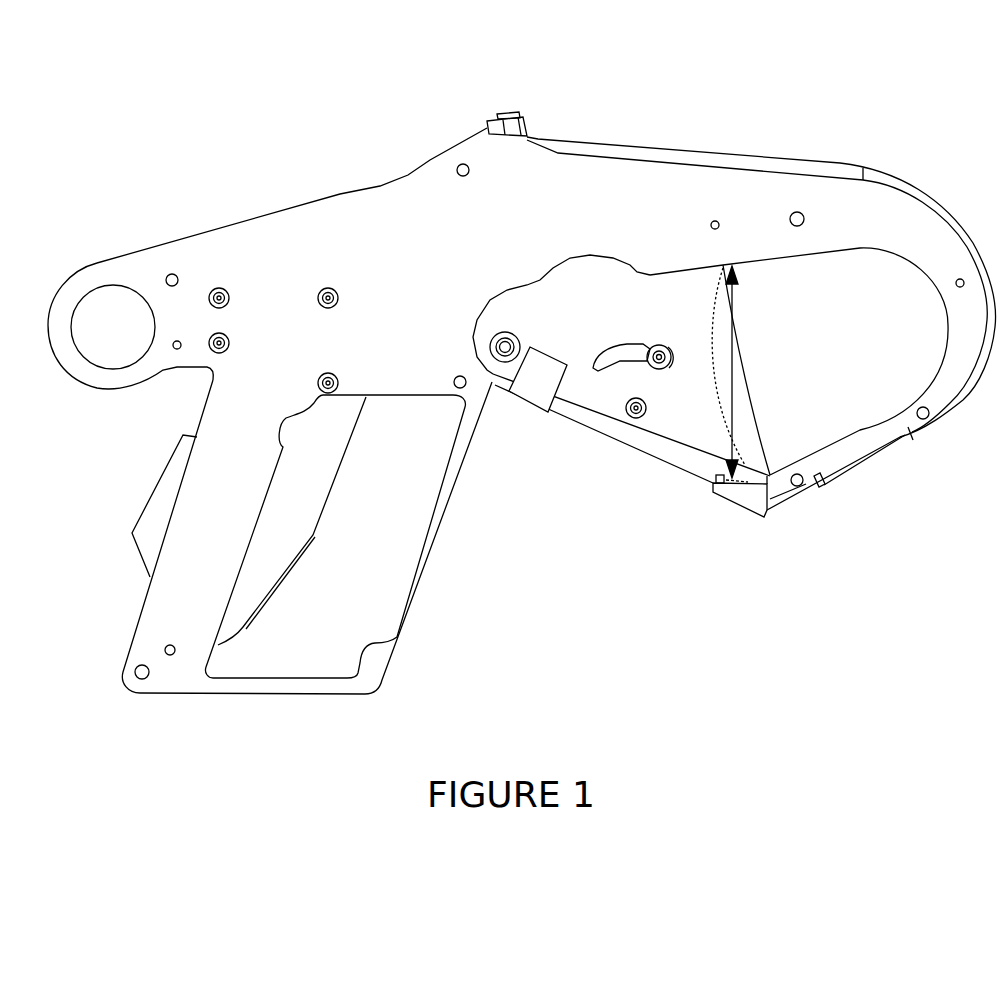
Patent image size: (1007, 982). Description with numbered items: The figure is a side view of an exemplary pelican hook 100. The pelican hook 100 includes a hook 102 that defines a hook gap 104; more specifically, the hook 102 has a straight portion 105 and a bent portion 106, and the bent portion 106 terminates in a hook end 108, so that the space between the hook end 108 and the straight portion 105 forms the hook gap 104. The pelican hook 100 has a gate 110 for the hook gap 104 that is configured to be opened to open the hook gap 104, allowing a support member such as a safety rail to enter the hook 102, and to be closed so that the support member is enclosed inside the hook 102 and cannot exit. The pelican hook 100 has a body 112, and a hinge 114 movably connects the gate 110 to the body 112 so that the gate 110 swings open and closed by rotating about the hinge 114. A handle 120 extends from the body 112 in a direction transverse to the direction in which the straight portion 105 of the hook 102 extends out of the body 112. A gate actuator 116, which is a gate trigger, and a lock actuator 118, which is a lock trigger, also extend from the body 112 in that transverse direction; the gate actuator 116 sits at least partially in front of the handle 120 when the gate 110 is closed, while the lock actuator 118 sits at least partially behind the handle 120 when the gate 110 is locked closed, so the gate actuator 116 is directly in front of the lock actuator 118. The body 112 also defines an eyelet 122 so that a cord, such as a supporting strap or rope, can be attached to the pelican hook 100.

The pelican hook 100 is at (206, 115).
The hook 102 is at (947, 227).
The hook gap 104 is at (733, 362).
The straight portion 105 is at (758, 200).
The bent portion 106 is at (947, 383).
The hook end 108 is at (760, 493).
The gate 110 is at (583, 373).
The body 112 is at (370, 215).
The hinge 114 is at (505, 350).
The gate actuator 116 is at (312, 453).
The lock actuator 118 is at (157, 523).
The handle 120 is at (167, 600).
The eyelet 122 is at (110, 330).